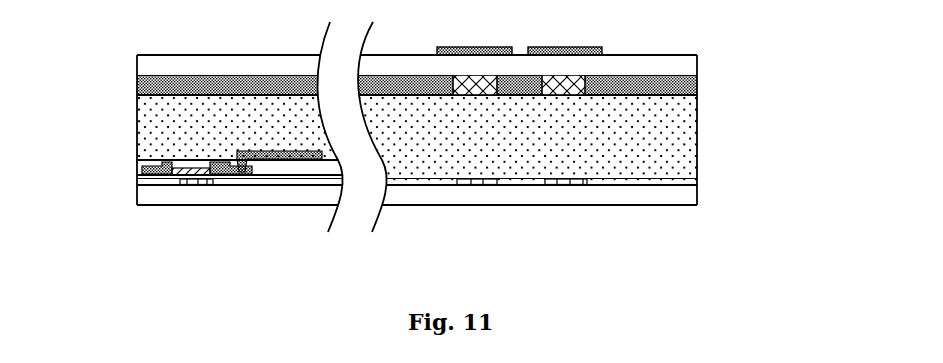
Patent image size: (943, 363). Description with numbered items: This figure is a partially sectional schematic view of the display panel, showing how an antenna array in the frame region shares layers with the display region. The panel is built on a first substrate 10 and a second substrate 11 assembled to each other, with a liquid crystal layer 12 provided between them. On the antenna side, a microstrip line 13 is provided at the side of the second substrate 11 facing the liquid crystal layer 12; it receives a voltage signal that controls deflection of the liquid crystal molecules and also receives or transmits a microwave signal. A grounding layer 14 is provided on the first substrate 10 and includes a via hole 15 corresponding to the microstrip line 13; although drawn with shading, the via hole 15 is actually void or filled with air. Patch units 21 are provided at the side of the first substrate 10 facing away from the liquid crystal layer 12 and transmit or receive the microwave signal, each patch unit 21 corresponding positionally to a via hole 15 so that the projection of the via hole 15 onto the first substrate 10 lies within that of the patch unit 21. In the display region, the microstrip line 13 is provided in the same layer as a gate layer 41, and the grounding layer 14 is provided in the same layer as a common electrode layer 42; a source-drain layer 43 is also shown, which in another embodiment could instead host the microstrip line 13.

The first substrate 10 is at (180, 65).
The second substrate 11 is at (180, 197).
The liquid crystal layer 12 is at (183, 121).
The microstrip line 13 is at (587, 179).
The grounding layer 14 is at (697, 87).
The via hole 15 is at (567, 88).
The patch unit 21 is at (602, 50).
The gate layer 41 is at (150, 176).
The common electrode layer 42 is at (180, 85).
The source-drain layer 43 is at (145, 163).